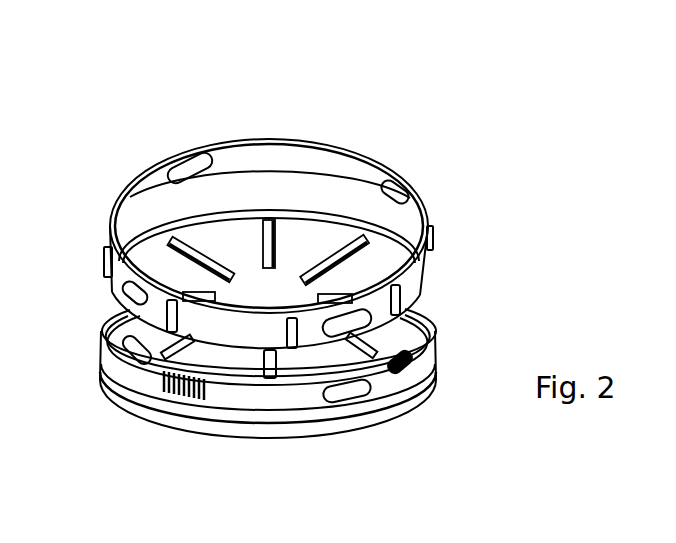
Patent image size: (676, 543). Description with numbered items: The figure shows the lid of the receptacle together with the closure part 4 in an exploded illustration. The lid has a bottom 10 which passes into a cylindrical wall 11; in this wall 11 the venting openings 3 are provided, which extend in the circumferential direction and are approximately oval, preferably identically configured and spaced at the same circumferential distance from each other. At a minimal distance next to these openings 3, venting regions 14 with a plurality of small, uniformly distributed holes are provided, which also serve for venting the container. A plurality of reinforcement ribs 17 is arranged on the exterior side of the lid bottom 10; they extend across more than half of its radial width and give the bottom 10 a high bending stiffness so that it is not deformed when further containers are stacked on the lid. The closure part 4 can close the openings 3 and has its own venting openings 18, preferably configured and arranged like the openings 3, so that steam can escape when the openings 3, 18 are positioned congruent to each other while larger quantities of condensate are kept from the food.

The venting openings 3 is at (272, 414).
The closure part 4 is at (436, 201).
The bottom 10 is at (322, 242).
The cylindrical wall 11 is at (263, 402).
The venting regions 14 is at (178, 383).
The reinforcement ribs 17 is at (203, 256).
The venting openings 18 is at (182, 157).